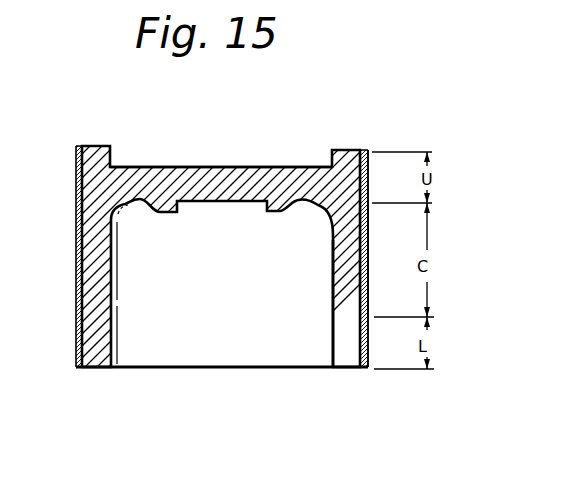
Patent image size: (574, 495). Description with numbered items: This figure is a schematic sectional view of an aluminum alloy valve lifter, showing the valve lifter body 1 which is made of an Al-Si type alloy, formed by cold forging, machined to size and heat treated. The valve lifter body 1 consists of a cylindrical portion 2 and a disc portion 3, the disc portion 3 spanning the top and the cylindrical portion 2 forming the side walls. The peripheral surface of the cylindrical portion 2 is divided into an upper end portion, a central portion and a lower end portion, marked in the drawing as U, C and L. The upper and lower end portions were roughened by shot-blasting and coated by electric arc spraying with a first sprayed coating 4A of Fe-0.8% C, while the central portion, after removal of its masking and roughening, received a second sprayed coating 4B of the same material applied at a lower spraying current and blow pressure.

The valve lifter body 1 is at (352, 150).
The cylindrical portion 2 is at (341, 316).
The disc portion 3 is at (272, 181).
The first sprayed coating 4A is at (369, 180).
The second sprayed coating 4B is at (369, 258).